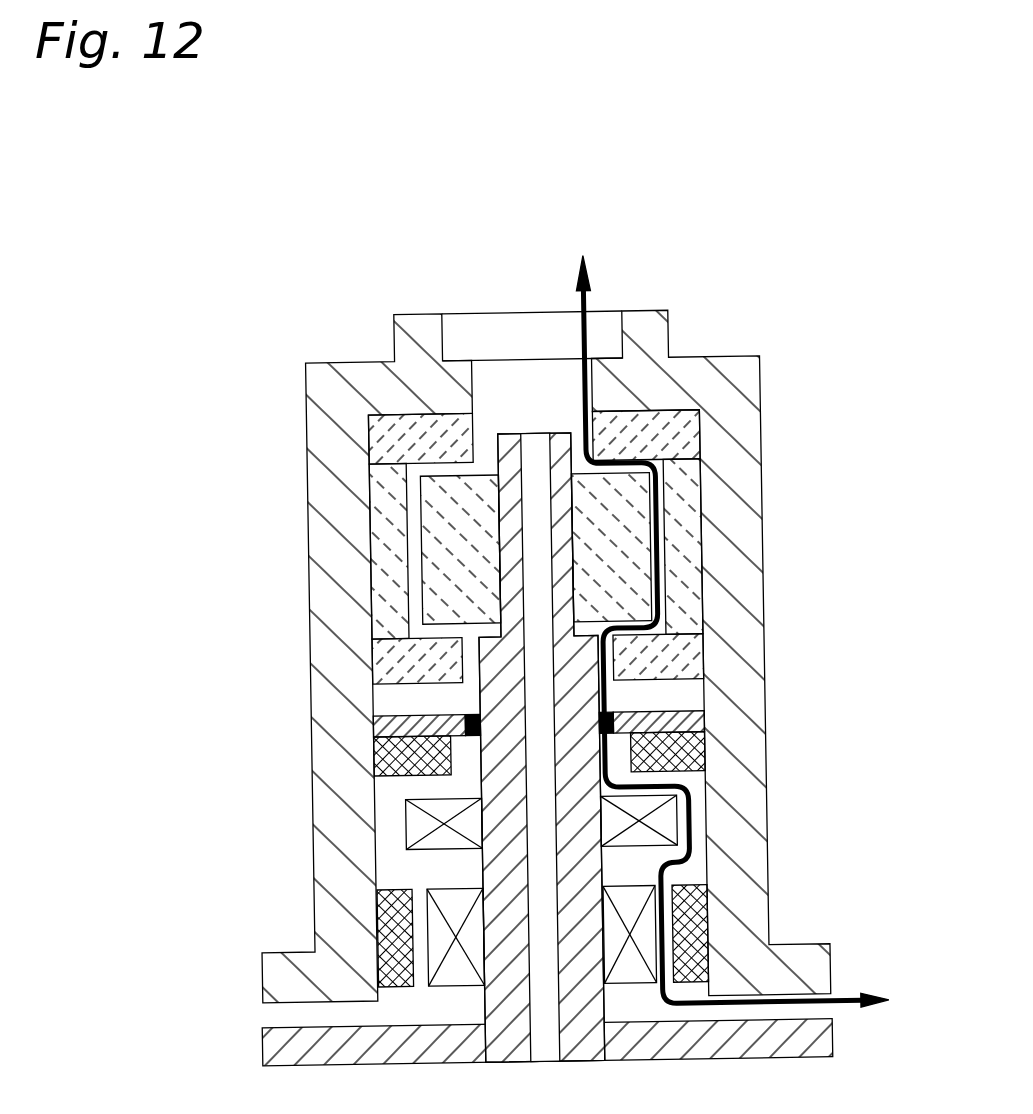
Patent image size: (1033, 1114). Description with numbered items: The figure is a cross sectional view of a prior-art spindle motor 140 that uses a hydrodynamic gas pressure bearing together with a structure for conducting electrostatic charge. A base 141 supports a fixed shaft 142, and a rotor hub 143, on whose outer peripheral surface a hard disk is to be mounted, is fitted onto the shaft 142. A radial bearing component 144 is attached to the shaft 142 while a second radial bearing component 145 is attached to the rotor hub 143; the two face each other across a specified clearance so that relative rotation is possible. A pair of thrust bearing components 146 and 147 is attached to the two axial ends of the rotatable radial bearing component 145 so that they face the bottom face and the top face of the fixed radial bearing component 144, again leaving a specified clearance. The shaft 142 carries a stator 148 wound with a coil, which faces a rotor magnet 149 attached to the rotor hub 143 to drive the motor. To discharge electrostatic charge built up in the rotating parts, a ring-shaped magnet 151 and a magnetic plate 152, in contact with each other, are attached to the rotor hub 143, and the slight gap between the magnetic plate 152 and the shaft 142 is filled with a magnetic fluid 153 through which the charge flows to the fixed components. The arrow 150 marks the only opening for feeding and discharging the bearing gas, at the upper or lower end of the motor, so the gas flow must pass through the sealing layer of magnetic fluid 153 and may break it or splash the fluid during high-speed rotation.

The spindle motor 140 is at (636, 200).
The base 141 is at (284, 1049).
The shaft 142 is at (503, 820).
The rotor hub 143 is at (350, 720).
The radial bearing component 144 is at (432, 596).
The radial bearing component 145 is at (392, 543).
The thrust bearing component 146 is at (383, 663).
The thrust bearing component 147 is at (389, 423).
The stator 148 is at (437, 909).
The rotor magnet 149 is at (376, 928).
The arrow 150 is at (606, 294).
The ring-shaped magnet 151 is at (694, 758).
The magnetic plate 152 is at (704, 728).
The magnetic fluid 153 is at (614, 720).